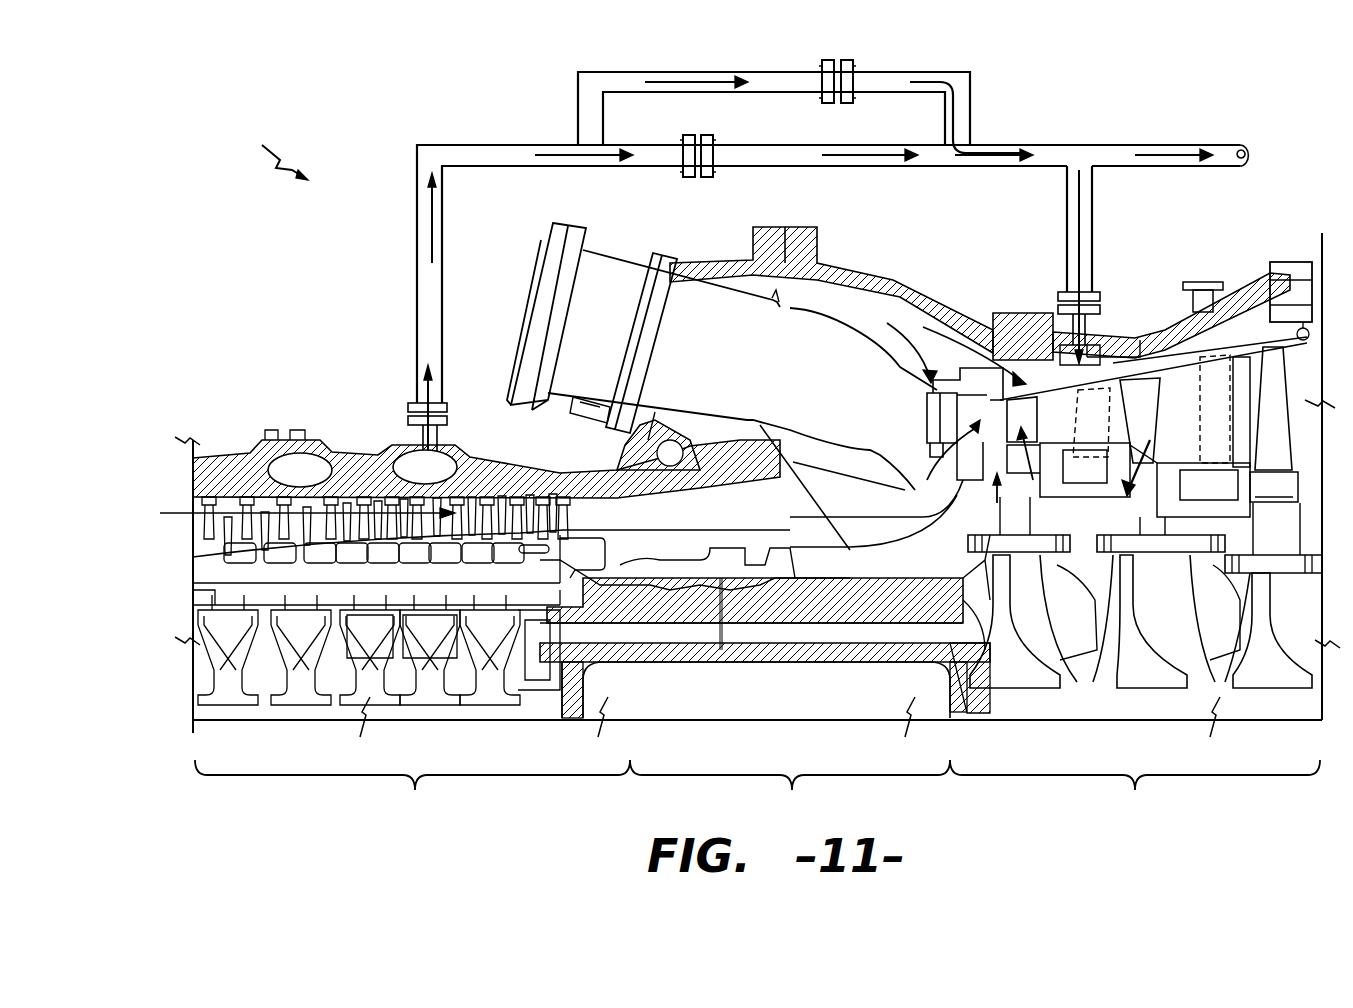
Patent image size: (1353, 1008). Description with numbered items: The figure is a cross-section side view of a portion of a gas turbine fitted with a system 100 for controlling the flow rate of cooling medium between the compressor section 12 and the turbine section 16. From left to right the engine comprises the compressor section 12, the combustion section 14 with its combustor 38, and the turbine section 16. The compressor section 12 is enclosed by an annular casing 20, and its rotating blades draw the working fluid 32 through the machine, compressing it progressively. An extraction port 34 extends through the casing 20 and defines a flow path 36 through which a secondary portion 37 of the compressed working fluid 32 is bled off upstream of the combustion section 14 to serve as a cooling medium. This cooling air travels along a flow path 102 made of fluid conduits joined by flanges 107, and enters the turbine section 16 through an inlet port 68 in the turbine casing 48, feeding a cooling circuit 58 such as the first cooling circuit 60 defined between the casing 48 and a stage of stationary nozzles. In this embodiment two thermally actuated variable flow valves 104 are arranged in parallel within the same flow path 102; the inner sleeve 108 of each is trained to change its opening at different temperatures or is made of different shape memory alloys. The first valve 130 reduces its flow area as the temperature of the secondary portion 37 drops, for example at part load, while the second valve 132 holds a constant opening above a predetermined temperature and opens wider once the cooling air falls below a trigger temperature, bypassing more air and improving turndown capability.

The system 100 is at (260, 148).
The compressor section 12 is at (412, 794).
The combustion section 14 is at (790, 793).
The turbine section 16 is at (1135, 793).
The casing 20 is at (228, 457).
The working fluid 32 is at (185, 500).
The extraction port 34 is at (445, 440).
The flow path 36 is at (400, 463).
The secondary portion of the compressed working fluid 37 is at (690, 78).
The combustor 38 is at (605, 237).
The casing 48 is at (1272, 263).
The cooling circuit 58 is at (1132, 427).
The first cooling circuit 60 is at (1030, 345).
The inlet port 68 is at (1100, 330).
The flow path 102 is at (432, 300).
The variable flow valve 104 is at (412, 405).
The flange 107 is at (688, 133).
The inner sleeve 108 is at (448, 415).
The first valve 130 is at (710, 133).
The second valve 132 is at (852, 60).